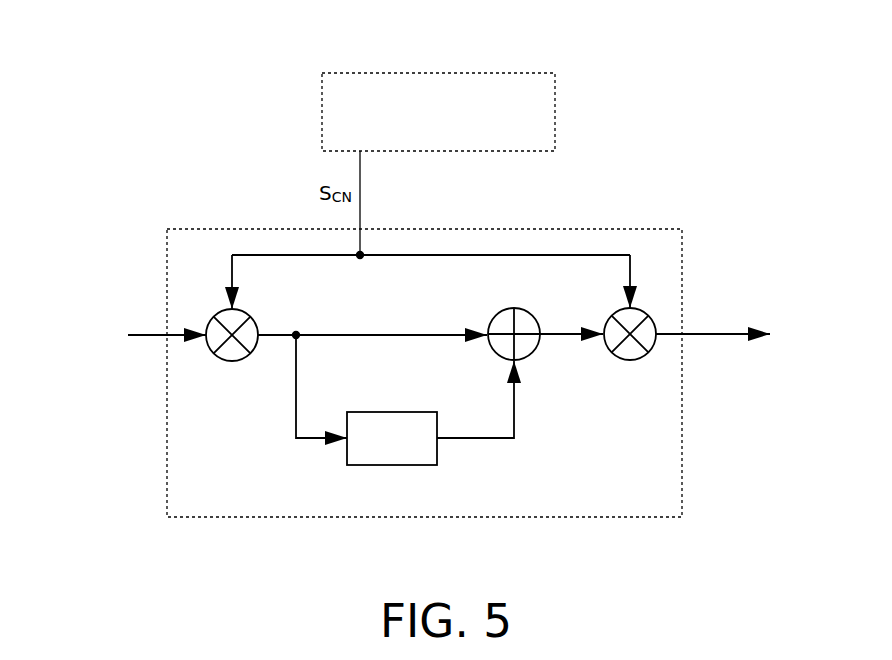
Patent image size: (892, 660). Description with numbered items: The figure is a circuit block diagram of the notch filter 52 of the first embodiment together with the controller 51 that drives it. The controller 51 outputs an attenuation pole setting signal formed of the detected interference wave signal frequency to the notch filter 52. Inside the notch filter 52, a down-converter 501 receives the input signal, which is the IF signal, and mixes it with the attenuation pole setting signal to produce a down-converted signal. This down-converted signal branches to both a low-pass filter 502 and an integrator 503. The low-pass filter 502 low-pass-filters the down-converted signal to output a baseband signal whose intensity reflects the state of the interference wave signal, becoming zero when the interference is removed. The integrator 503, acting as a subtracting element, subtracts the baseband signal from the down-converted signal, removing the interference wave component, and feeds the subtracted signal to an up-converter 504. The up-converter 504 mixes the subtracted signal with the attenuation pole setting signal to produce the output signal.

The controller 51 is at (513, 73).
The notch filter 52 is at (233, 519).
The down-converter 501 is at (228, 361).
The low-pass filter 502 is at (419, 411).
The integrator 503 is at (521, 306).
The up-converter 504 is at (623, 361).